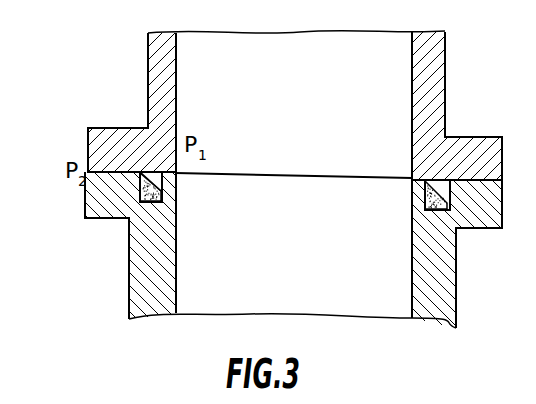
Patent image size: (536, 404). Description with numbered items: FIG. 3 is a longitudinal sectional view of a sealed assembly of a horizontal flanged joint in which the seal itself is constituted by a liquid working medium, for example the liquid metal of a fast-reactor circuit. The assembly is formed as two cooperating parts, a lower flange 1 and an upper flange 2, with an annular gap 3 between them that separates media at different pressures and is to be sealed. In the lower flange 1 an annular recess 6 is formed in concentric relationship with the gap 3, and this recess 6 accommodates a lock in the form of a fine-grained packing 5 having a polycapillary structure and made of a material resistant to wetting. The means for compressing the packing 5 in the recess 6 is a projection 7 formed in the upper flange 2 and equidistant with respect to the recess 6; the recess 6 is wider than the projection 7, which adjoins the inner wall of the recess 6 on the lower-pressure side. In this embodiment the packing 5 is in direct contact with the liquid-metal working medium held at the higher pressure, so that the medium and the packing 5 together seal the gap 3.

The lower flange 1 is at (85, 208).
The upper flange 2 is at (130, 137).
The annular gap 3 is at (314, 173).
The fine-grained packing 5 is at (138, 198).
The annular recess 6 is at (458, 231).
The projection 7 is at (148, 176).